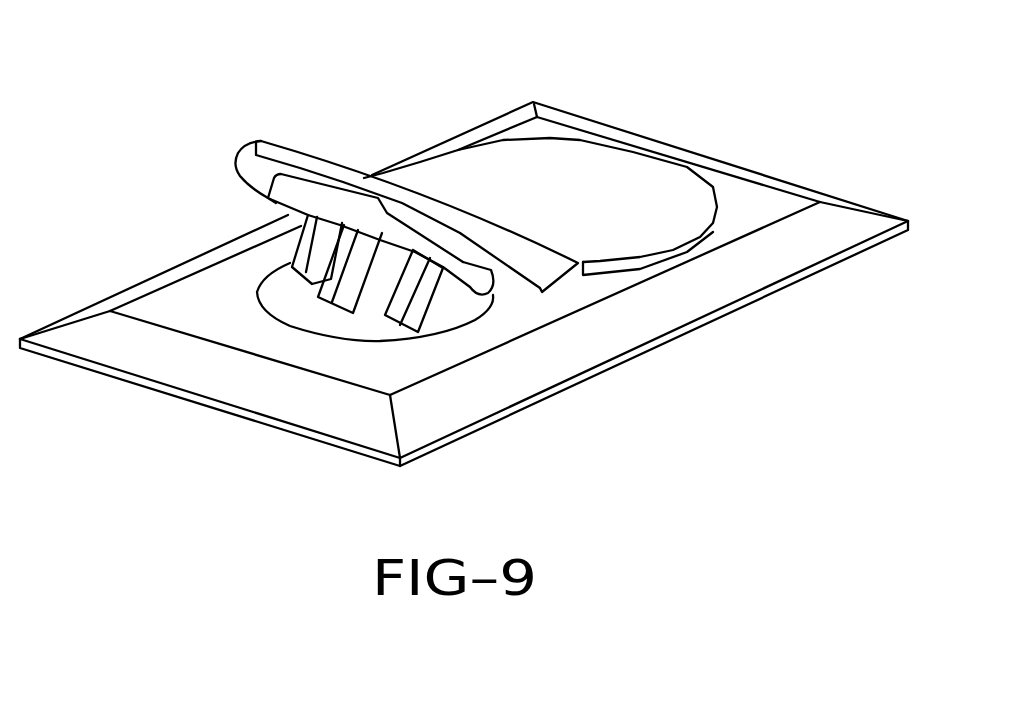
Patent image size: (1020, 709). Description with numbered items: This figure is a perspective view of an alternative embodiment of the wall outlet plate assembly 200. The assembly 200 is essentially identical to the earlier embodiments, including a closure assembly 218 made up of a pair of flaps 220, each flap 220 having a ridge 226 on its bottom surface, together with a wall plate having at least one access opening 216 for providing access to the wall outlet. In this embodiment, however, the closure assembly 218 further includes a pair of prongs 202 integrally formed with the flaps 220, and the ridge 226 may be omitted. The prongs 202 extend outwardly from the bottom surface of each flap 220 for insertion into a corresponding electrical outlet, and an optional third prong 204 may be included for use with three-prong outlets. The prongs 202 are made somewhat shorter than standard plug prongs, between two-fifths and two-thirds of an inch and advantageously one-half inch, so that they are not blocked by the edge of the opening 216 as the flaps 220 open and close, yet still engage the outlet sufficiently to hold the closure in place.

The wall outlet plate assembly 200 is at (170, 158).
The prongs 202 is at (343, 295).
The third prong 204 is at (304, 255).
The access opening 216 is at (443, 315).
The closure assembly 218 is at (433, 161).
The flaps 220 is at (313, 161).
The ridge 226 is at (470, 262).